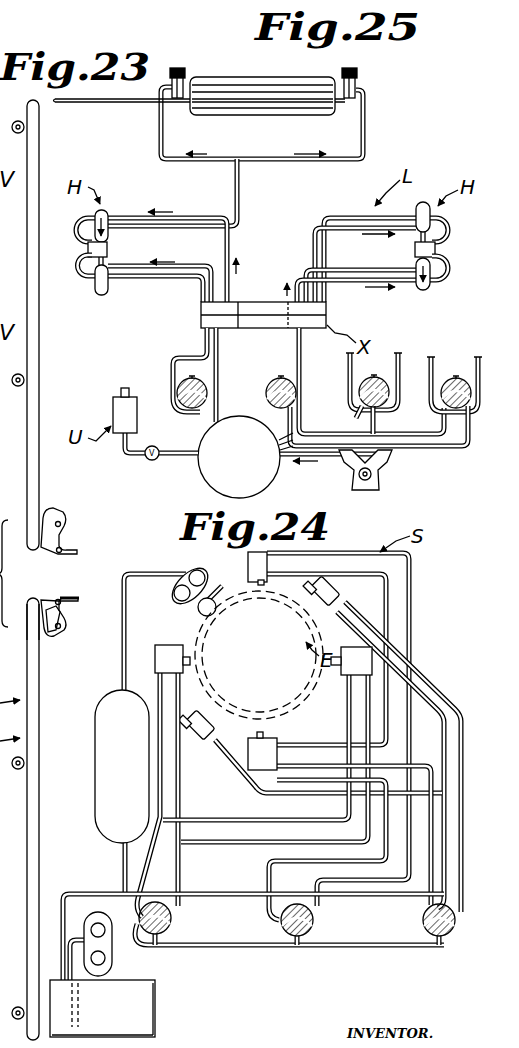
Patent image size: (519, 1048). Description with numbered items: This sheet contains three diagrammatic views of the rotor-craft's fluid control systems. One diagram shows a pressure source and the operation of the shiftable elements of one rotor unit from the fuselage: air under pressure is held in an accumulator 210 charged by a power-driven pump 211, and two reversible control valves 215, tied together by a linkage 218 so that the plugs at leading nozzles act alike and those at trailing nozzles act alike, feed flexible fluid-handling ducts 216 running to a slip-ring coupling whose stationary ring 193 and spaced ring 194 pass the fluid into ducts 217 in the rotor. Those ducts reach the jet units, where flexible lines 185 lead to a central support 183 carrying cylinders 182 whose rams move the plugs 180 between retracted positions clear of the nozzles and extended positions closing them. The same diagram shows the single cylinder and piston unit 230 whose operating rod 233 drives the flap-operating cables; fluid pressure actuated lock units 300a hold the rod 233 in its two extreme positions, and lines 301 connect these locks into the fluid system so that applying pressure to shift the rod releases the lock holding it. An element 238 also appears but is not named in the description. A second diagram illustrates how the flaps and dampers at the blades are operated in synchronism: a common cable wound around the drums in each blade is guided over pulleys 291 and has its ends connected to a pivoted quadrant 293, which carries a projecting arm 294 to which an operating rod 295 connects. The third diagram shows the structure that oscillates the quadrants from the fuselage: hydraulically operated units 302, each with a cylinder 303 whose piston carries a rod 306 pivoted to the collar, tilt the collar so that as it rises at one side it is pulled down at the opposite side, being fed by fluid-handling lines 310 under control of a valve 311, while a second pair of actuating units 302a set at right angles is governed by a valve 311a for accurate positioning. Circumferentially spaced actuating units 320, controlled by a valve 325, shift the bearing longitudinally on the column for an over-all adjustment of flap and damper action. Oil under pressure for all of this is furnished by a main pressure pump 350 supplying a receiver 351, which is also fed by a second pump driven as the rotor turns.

In FIG. 25, the plug 180 is at (110, 212).
In FIG. 25, the cylinder 182 is at (108, 266).
In FIG. 25, the central support 183 is at (110, 248).
In FIG. 25, the flexible lines 185 is at (246, 195).
In FIG. 25, the stationary ring 193 is at (200, 323).
In FIG. 25, the ring 194 is at (329, 312).
In FIG. 25, the accumulator 210 is at (293, 457).
In FIG. 25, the power-driven pump 211 is at (390, 478).
In FIG. 25, the reversible control valve 215 is at (297, 401).
In FIG. 25, the fluid handling duct 216 is at (306, 378).
In FIG. 25, the fluid-handling duct 217 is at (143, 282).
In FIG. 25, the linkage 218 is at (209, 410).
In FIG. 25, the cylinder and piston unit 230 is at (238, 111).
In FIG. 25, the operating rod 233 is at (103, 107).
In FIG. 25, the return conduit 238 is at (161, 128).
In FIG. 23, the pulley 291 is at (34, 597).
In FIG. 23, the pivoted quadrant 293 is at (50, 636).
In FIG. 23, the projecting arm 294 is at (65, 615).
In FIG. 23, the operating rod 295 is at (63, 596).
In FIG. 25, the lock unit 300a is at (358, 72).
In FIG. 25, the connector line 301 is at (367, 120).
In FIG. 24, the operating unit 302 is at (272, 553).
In FIG. 24, the actuating unit 302a is at (167, 645).
In FIG. 24, the cylinder 303 is at (247, 559).
In FIG. 24, the rod 306 is at (218, 587).
In FIG. 24, the fluid-handling line 310 is at (411, 598).
In FIG. 24, the valve 311 is at (314, 925).
In FIG. 24, the valve 311a is at (173, 921).
In FIG. 24, the actuating unit 320 is at (319, 592).
In FIG. 24, the valve 325 is at (448, 938).
In FIG. 24, the main pressure pump 350 is at (113, 966).
In FIG. 24, the receiver 351 is at (118, 791).